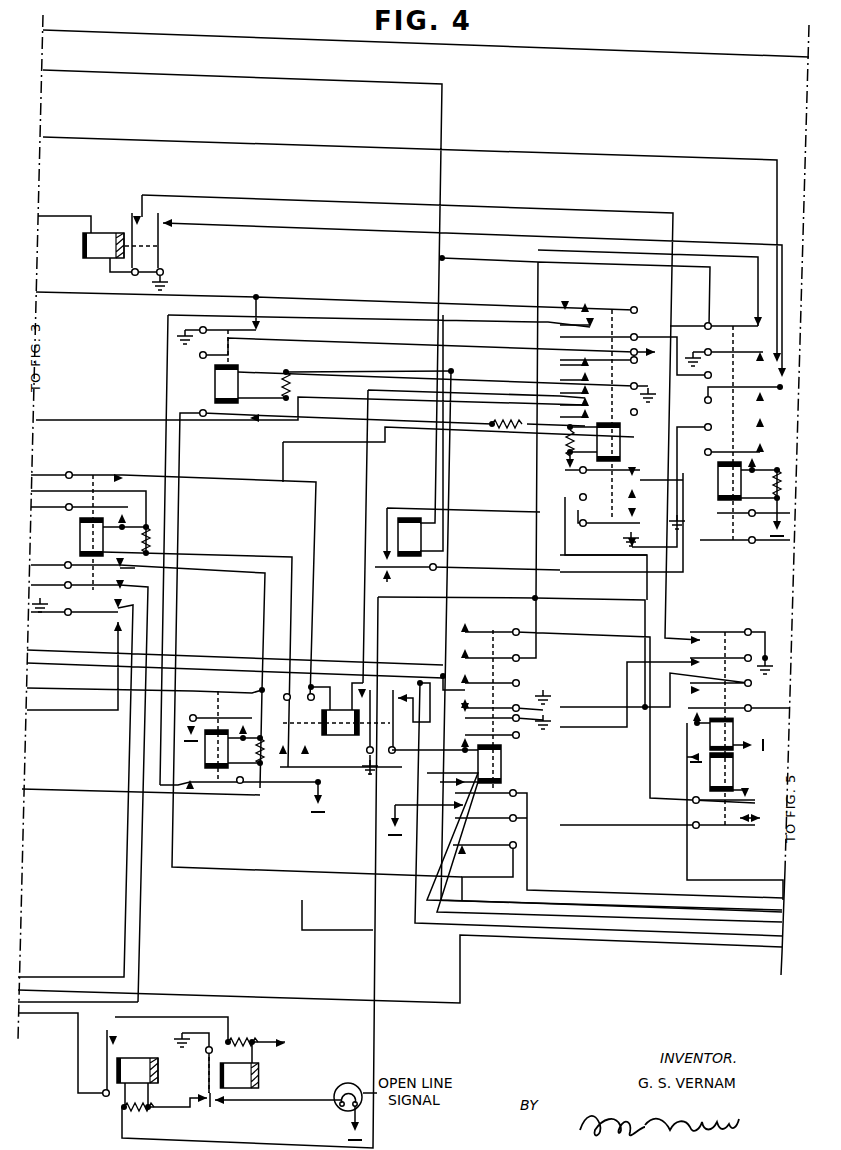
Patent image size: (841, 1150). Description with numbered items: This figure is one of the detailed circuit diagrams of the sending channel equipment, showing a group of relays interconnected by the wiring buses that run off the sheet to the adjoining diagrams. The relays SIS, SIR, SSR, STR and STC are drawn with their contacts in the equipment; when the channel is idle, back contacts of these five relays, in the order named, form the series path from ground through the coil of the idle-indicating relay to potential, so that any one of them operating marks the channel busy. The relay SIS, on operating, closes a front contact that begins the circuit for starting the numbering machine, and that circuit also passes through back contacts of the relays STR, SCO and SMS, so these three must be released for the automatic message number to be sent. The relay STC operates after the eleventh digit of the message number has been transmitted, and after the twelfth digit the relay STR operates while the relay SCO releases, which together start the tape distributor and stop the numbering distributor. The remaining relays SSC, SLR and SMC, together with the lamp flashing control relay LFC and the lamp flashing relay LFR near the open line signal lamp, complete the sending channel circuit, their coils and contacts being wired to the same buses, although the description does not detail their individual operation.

The relay SSC is at (122, 242).
The relay SCO is at (407, 550).
The relay SIR is at (173, 737).
The relay SLR is at (458, 536).
The relay STR is at (634, 450).
The relay SSR is at (675, 444).
The relay STC is at (173, 751).
The relay SIS is at (530, 808).
The relay SMS is at (580, 758).
The relay SMC is at (675, 764).
The lamp flashing control relay LFC is at (105, 1112).
The lamp flashing relay LFR is at (313, 1024).